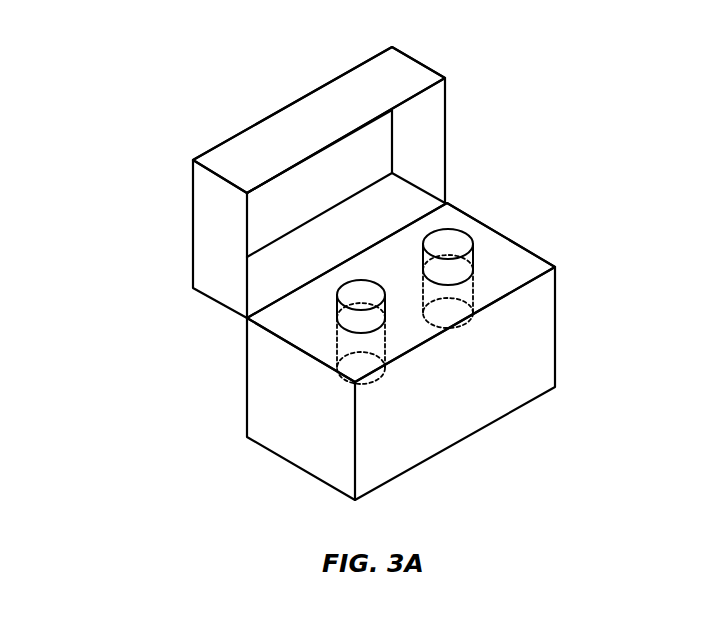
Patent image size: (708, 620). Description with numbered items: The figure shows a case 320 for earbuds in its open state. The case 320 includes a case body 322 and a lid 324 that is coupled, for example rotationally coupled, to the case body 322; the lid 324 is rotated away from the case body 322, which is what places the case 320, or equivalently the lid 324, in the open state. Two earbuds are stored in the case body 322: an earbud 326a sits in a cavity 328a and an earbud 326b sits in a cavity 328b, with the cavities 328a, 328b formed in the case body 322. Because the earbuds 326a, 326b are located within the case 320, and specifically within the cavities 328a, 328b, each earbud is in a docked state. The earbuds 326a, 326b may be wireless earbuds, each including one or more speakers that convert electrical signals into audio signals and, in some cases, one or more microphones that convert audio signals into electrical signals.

The case 320 is at (25, 86).
The case body 322 is at (288, 466).
The lid 324 is at (192, 193).
The earbud 326a is at (340, 312).
The earbud 326b is at (460, 228).
The cavity 328a is at (338, 343).
The cavity 328b is at (472, 283).